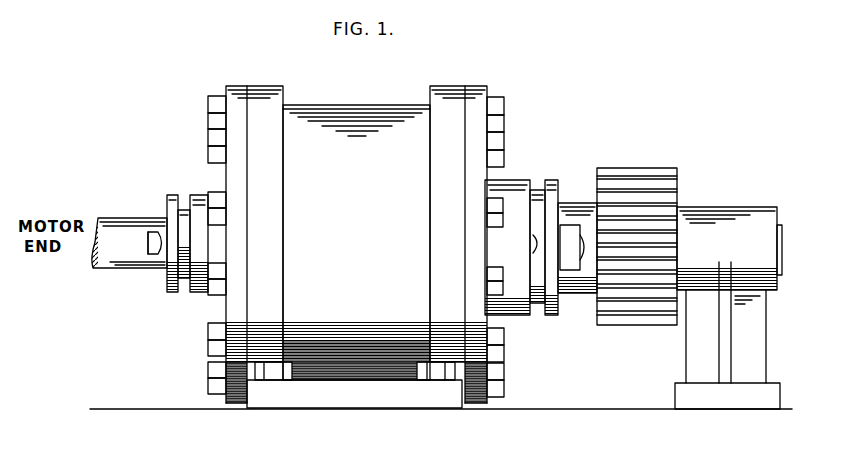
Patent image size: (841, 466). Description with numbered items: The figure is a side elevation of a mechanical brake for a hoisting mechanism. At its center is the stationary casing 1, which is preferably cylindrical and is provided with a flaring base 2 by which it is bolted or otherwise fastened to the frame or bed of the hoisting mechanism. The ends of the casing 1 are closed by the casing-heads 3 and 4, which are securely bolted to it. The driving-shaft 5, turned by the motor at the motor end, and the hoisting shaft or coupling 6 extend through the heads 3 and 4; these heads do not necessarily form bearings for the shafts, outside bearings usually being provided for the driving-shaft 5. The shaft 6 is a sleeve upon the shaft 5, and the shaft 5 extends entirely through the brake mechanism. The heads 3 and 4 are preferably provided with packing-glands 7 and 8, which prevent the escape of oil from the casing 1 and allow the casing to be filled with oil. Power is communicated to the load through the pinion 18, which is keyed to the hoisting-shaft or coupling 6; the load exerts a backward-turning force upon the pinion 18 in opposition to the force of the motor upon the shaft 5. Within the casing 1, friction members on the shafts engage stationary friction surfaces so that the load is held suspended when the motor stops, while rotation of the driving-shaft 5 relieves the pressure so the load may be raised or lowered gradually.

The stationary casing 1 is at (344, 114).
The flaring base 2 is at (357, 402).
The casing-head 3 is at (235, 172).
The casing-head 4 is at (483, 92).
The driving-shaft 5 is at (122, 217).
The hoisting shaft or coupling 6 is at (575, 203).
The packing-gland 7 is at (168, 288).
The packing-gland 8 is at (552, 179).
The pinion 18 is at (645, 170).